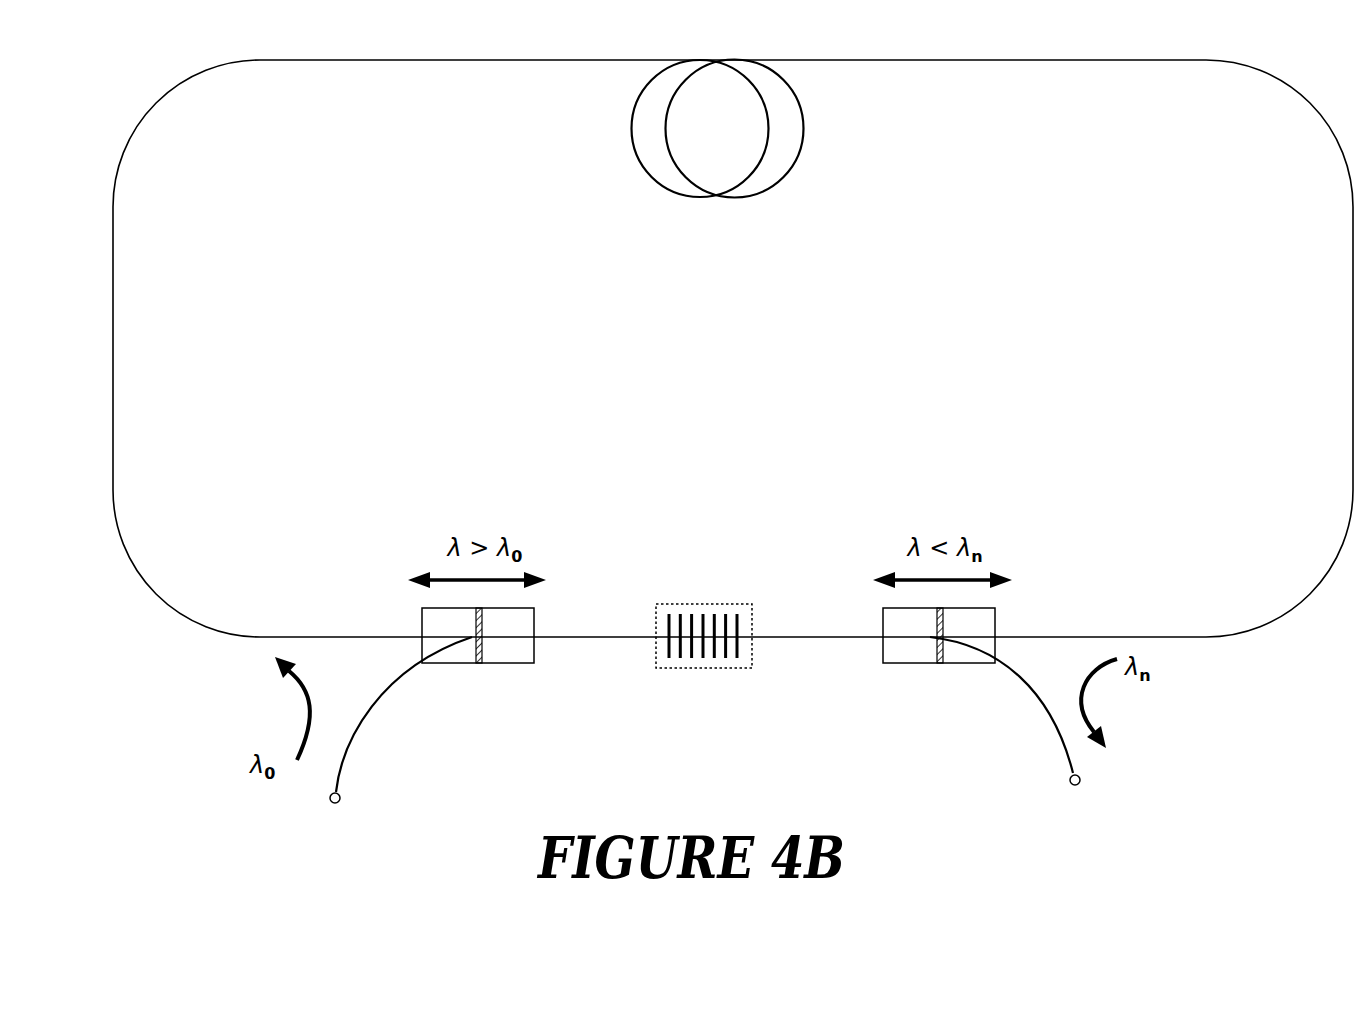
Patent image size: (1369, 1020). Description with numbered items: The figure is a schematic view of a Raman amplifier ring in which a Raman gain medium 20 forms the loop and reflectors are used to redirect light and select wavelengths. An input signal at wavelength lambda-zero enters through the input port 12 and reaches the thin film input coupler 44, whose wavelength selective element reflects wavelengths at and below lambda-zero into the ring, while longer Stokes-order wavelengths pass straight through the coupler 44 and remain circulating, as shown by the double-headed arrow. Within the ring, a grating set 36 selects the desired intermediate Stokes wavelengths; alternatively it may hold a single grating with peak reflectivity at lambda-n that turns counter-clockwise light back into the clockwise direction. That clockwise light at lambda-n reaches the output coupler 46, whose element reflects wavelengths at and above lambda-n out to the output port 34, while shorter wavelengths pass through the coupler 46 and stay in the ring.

The input port 12 is at (330, 806).
The Raman gain medium 20 is at (720, 198).
The output port 34 is at (1070, 788).
The grating set 36 is at (720, 664).
The input coupler 44 is at (517, 658).
The output coupler 46 is at (890, 658).